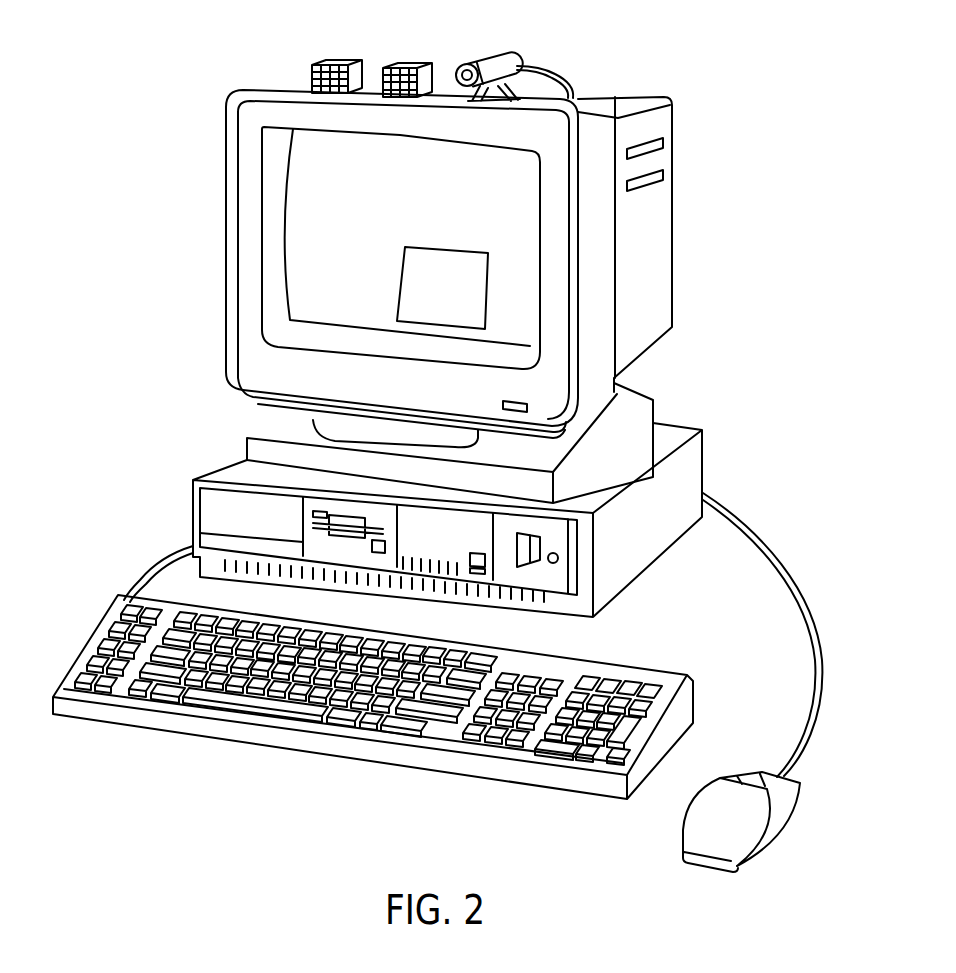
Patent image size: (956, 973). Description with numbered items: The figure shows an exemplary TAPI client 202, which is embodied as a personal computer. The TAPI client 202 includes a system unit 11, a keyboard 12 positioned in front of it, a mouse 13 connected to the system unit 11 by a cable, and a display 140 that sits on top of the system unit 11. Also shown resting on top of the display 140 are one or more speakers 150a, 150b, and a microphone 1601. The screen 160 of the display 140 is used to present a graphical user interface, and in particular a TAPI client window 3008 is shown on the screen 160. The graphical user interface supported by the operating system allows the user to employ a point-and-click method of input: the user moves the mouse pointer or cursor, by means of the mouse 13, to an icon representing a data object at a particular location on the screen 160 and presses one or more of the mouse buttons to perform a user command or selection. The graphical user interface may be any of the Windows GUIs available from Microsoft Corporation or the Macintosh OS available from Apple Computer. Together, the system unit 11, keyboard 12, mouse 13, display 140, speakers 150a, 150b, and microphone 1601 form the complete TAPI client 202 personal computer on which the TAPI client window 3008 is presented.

The TAPI client 202 is at (147, 338).
The display 140 is at (226, 213).
The screen 160 is at (358, 262).
The TAPI client window 3008 is at (445, 246).
The speaker 150a is at (330, 62).
The speaker 150b is at (412, 66).
The microphone 1601 is at (507, 62).
The system unit 11 is at (190, 511).
The keyboard 12 is at (145, 727).
The mouse 13 is at (775, 842).